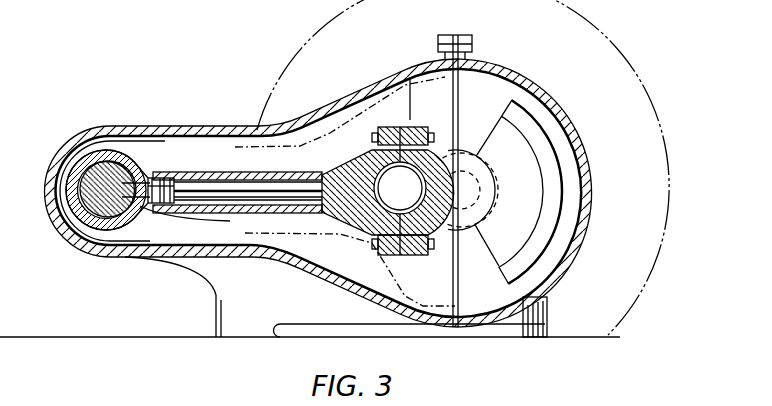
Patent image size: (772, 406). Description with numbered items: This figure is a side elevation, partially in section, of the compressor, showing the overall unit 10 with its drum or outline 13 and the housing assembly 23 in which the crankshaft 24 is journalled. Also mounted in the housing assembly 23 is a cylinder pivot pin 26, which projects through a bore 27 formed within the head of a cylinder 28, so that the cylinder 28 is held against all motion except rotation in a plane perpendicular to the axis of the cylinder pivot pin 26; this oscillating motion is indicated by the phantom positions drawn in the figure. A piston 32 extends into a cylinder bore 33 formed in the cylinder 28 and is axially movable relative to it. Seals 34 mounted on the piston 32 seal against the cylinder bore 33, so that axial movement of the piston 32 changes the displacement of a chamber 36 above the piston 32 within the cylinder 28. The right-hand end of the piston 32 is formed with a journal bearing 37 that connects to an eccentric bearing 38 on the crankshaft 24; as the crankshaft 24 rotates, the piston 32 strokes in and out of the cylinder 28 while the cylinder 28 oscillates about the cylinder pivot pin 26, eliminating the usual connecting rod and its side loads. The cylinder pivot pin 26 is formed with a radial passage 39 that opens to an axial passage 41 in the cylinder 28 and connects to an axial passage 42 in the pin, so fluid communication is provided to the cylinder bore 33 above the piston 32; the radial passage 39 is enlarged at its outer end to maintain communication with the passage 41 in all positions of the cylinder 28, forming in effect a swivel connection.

The housing 10 is at (368, 86).
The drum 13 is at (290, 62).
The housing assembly 23 is at (540, 86).
The crankshaft 24 is at (498, 123).
The cylinder pivot pin 26 is at (98, 187).
The bore 27 is at (122, 220).
The cylinder 28 is at (237, 180).
The piston 32 is at (272, 213).
The cylinder bore 33 is at (244, 184).
The seals 34 is at (190, 210).
The chamber 36 is at (188, 162).
The journal bearing 37 is at (414, 129).
The eccentric bearing 38 is at (391, 197).
The radial passage 39 is at (166, 214).
The axial passage 41 is at (156, 178).
The axial passage 42 is at (150, 177).